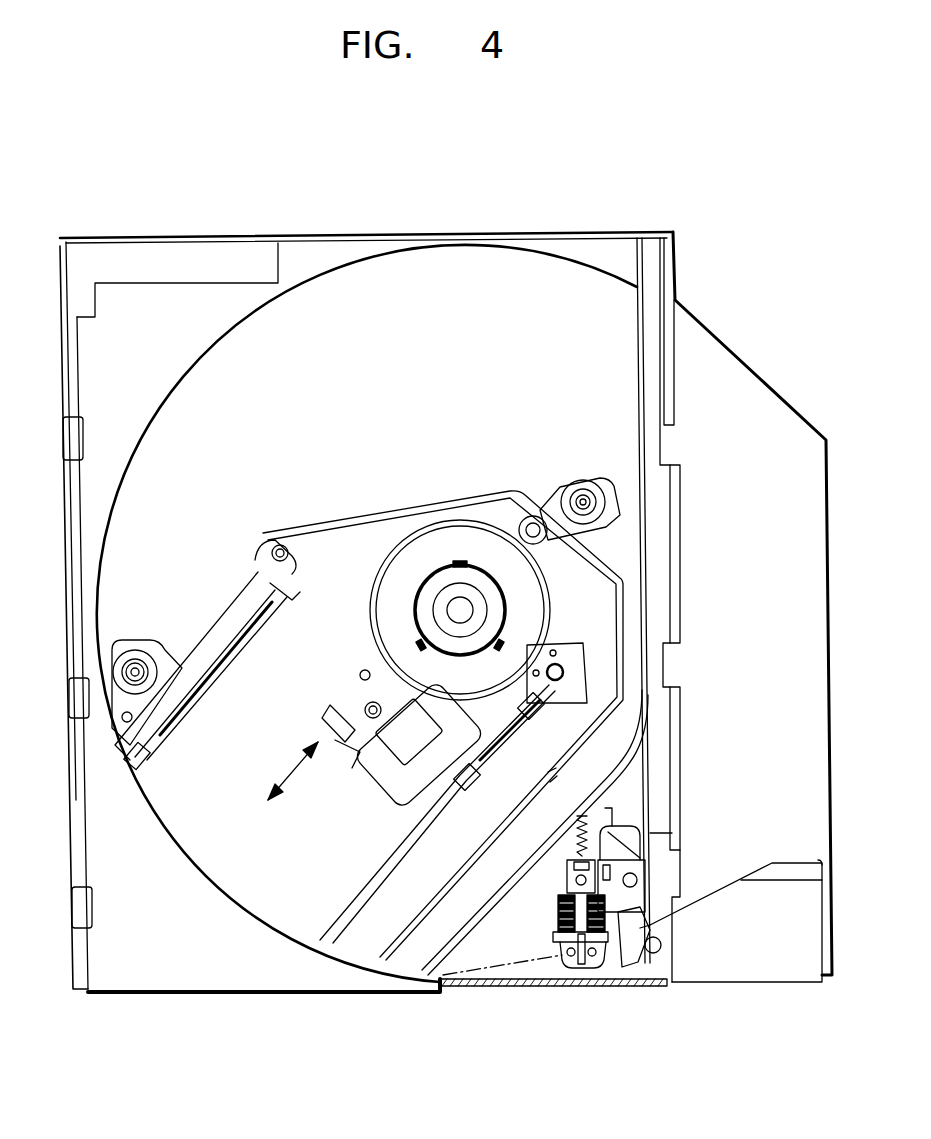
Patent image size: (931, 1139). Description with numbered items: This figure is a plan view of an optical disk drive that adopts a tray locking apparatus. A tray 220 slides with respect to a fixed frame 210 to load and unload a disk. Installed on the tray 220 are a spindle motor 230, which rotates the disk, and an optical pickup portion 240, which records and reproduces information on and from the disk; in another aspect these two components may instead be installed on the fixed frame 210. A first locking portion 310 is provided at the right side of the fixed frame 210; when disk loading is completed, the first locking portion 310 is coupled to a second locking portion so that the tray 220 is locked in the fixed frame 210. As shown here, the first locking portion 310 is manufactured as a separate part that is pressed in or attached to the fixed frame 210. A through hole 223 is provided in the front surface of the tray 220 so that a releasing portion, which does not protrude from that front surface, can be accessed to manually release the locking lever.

The fixed frame 210 is at (283, 237).
The tray 220 is at (212, 282).
The through hole 223 is at (632, 988).
The spindle motor 230 is at (457, 520).
The optical pickup portion 240 is at (372, 765).
The first locking portion 310 is at (655, 953).